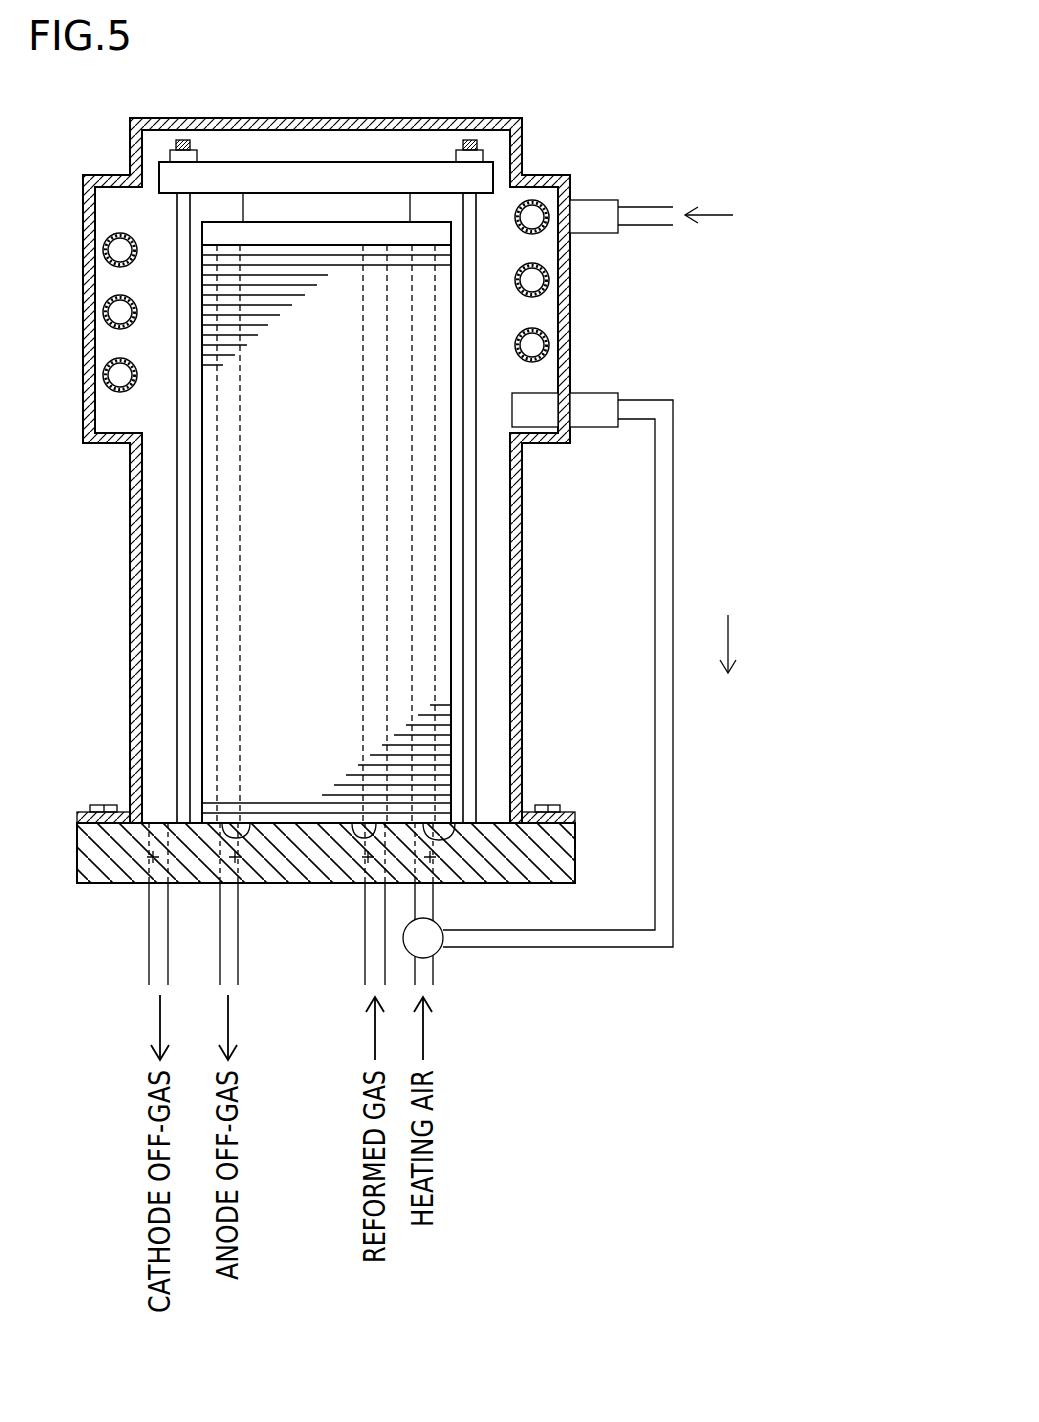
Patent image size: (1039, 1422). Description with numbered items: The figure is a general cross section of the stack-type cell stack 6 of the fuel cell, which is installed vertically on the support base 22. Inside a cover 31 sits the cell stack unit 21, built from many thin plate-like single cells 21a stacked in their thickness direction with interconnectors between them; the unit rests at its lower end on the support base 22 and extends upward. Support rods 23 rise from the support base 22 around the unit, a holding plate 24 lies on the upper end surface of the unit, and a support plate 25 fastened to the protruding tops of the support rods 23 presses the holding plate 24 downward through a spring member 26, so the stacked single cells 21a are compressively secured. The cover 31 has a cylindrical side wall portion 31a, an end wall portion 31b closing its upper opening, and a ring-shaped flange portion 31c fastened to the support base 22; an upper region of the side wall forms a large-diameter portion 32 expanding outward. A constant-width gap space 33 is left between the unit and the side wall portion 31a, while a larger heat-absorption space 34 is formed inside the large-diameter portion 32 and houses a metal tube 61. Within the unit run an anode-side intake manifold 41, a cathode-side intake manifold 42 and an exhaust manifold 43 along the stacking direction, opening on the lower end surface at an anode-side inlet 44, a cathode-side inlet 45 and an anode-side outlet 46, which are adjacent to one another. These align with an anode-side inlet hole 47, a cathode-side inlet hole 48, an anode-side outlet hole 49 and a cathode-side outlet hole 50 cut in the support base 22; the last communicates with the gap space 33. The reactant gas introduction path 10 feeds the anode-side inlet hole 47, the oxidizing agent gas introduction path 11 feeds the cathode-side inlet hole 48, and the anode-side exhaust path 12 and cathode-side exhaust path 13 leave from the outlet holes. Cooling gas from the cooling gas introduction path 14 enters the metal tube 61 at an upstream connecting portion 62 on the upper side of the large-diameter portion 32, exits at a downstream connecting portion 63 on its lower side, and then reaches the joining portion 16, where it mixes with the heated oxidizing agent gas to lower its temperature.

The cell stack 6 is at (408, 85).
The reactant gas introduction path 10 is at (365, 968).
The oxidizing agent gas introduction path 11 is at (434, 972).
The anode-side exhaust path 12 is at (239, 966).
The cathode-side exhaust path 13 is at (150, 966).
The cooling gas introduction path 14 is at (656, 205).
The joining portion 16 is at (445, 950).
The cell stack unit 21 is at (257, 449).
The single cell 21a is at (340, 260).
The support base 22 is at (95, 858).
The support rod 23 is at (176, 652).
The holding plate 24 is at (360, 235).
The support plate 25 is at (262, 180).
The spring member 26 is at (315, 210).
The cover 31 is at (132, 565).
The side wall portion 31a is at (524, 574).
The end wall portion 31b is at (476, 117).
The flange portion 31c is at (564, 814).
The large-diameter portion 32 is at (83, 288).
The gap space 33 is at (160, 752).
The heat-absorption space 34 is at (155, 405).
The anode-side intake manifold 41 is at (363, 443).
The cathode-side intake manifold 42 is at (372, 534).
The exhaust manifold 43 is at (242, 612).
The anode-side inlet 44 is at (362, 838).
The cathode-side inlet 45 is at (455, 830).
The anode-side outlet 46 is at (242, 838).
The anode-side inlet hole 47 is at (365, 868).
The cathode-side inlet hole 48 is at (447, 868).
The anode-side outlet hole 49 is at (242, 865).
The cathode-side outlet hole 50 is at (150, 862).
The metal tube 61 is at (122, 236).
The upstream connecting portion 62 is at (600, 205).
The downstream connecting portion 63 is at (592, 428).